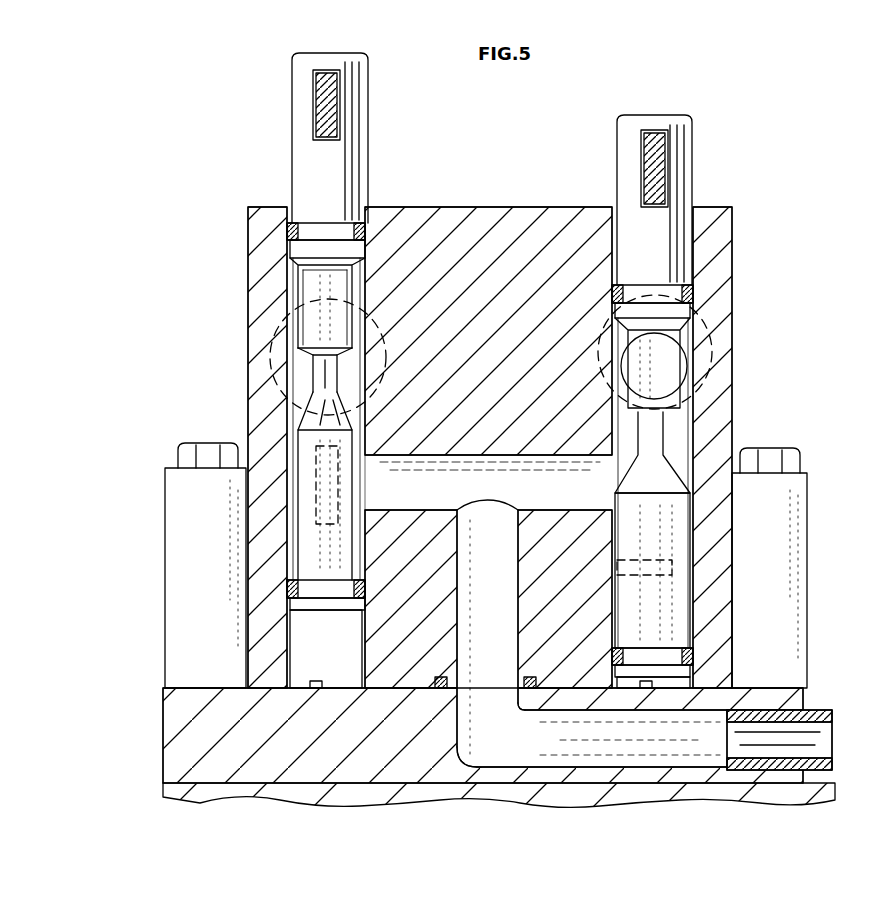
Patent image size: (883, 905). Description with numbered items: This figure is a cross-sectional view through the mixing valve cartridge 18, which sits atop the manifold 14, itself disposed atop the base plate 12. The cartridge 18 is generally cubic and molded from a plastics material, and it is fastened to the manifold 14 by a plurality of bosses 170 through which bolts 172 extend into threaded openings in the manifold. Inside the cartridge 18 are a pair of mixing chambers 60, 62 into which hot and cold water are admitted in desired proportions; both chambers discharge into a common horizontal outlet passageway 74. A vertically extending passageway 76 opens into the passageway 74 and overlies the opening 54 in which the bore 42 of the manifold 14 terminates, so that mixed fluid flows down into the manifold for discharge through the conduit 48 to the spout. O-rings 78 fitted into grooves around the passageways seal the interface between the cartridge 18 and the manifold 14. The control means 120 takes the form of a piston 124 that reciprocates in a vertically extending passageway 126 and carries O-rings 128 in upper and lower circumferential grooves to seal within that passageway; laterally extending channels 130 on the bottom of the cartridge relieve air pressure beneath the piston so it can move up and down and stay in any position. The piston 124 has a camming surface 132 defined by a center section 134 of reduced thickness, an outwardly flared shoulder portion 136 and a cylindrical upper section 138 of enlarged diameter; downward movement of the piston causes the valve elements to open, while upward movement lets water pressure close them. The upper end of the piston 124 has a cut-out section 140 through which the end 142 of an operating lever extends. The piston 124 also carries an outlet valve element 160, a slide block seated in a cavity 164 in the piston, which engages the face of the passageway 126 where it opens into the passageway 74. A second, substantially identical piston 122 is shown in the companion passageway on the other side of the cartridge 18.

The base plate 12 is at (175, 795).
The manifold 14 is at (180, 742).
The mixing valve cartridge 18 is at (503, 216).
The bore 42 is at (612, 765).
The conduit 48 is at (818, 718).
The opening 54 is at (458, 703).
The mixing chamber 60 is at (298, 364).
The mixing chamber 62 is at (702, 360).
The horizontal outlet passageway 74 is at (510, 458).
The vertically extending passageway 76 is at (516, 574).
The O-ring 78 is at (441, 677).
The control means 120 is at (374, 147).
The second piston 122 is at (702, 148).
The piston 124 is at (296, 445).
The vertically extending passageway 126 is at (357, 275).
The O-ring 128 is at (355, 228).
The laterally extending channel 130 is at (316, 690).
The camming surface 132 is at (352, 369).
The center section 134 is at (325, 395).
The outwardly flared shoulder portion 136 is at (320, 360).
The cylindrical upper section 138 is at (307, 305).
The cut-out section 140 is at (343, 93).
The end of lever 142 is at (318, 106).
The outlet valve element 160 is at (374, 484).
The cavity 164 is at (318, 528).
The boss 170 is at (183, 545).
The bolt 172 is at (182, 457).